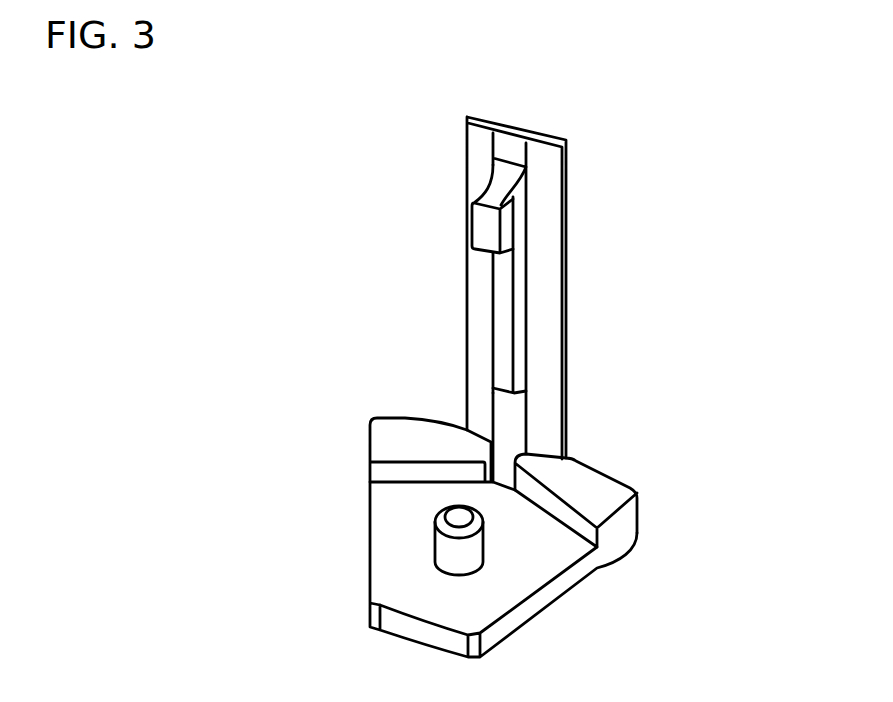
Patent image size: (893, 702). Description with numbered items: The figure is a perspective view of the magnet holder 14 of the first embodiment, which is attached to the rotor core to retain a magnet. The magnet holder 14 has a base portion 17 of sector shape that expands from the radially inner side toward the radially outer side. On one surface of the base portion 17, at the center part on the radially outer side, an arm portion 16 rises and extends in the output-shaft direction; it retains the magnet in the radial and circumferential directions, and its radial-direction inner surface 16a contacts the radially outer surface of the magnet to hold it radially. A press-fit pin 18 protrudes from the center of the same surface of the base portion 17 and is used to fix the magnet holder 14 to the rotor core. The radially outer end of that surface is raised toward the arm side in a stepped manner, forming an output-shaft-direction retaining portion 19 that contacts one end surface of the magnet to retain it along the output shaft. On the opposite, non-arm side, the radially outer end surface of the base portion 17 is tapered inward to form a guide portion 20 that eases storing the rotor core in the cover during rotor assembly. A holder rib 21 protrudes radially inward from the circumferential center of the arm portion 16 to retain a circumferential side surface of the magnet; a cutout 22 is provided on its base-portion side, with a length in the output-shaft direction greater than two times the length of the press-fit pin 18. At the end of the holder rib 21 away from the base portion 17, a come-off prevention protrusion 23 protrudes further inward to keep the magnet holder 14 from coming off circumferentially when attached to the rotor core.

The magnet holder 14 is at (596, 148).
The arm portion 16 is at (467, 173).
The radial-direction inner surface 16a is at (483, 320).
The base portion 17 is at (532, 573).
The press-fit pin 18 is at (463, 552).
The output-shaft-direction retaining portion 19 is at (403, 447).
The guide portion 20 is at (640, 534).
The holder rib 21 is at (499, 347).
The cutout 22 is at (508, 430).
The come-off prevention protrusion 23 is at (492, 233).